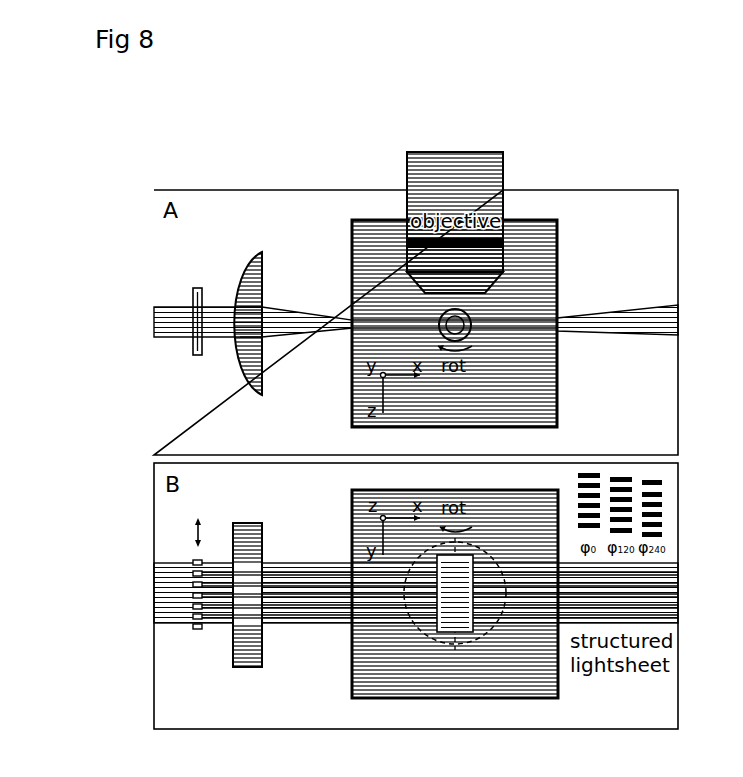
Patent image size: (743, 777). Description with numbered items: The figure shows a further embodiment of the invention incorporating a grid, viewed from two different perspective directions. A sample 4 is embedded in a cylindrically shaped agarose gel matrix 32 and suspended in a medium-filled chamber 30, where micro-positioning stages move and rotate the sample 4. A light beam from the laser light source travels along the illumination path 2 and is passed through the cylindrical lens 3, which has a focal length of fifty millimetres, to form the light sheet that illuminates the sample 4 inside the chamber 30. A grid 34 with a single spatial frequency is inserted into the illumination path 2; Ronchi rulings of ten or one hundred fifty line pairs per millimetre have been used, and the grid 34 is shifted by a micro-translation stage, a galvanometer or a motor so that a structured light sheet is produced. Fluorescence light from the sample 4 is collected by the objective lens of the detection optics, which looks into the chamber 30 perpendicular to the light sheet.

In FIG. 8A, the illumination path 2 is at (377, 322).
In FIG. 8A, the cylindrical lens 3 is at (255, 334).
In FIG. 8B, the cylindrical lens 3 is at (252, 575).
In FIG. 8A, the medium-filled chamber 30 is at (540, 288).
In FIG. 8A, the cylindrically shaped agarose gel matrix 32 is at (470, 331).
In FIG. 8A, the sample 4 is at (466, 336).
In FIG. 8B, the grid 34 is at (198, 633).